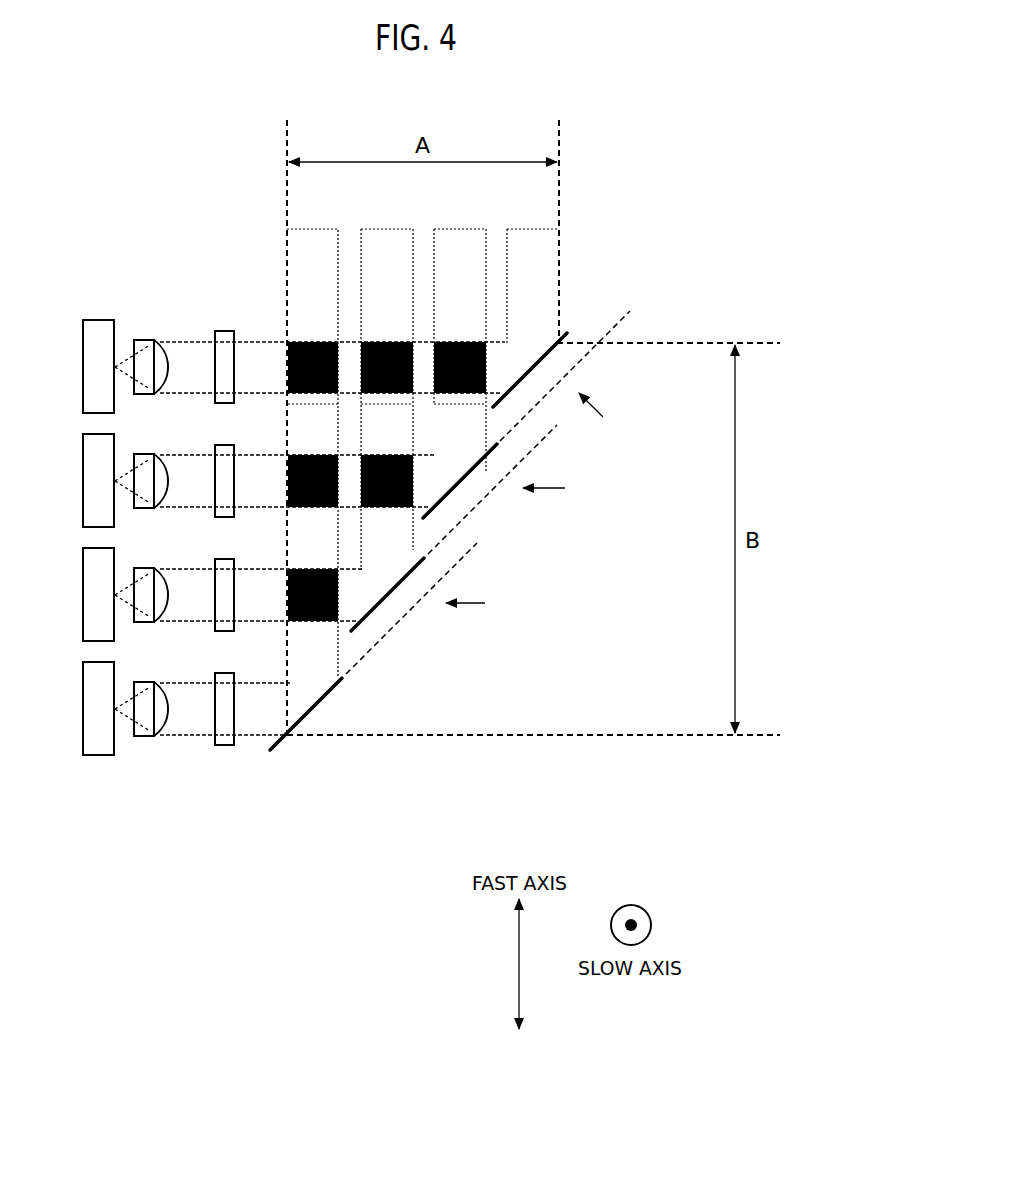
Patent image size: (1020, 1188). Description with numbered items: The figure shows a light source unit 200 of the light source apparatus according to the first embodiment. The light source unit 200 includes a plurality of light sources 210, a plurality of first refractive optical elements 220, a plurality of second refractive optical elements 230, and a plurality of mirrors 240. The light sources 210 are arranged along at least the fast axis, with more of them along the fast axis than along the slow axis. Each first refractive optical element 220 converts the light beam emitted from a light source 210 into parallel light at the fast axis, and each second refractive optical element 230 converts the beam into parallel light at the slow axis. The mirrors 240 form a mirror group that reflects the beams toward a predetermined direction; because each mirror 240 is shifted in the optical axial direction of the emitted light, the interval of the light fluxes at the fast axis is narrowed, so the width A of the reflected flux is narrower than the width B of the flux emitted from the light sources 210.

The light source unit 200 is at (609, 182).
The light source 210 is at (97, 318).
The first refractive optical element 220 is at (148, 338).
The second refractive optical element 230 is at (230, 330).
The mirror 240 is at (553, 352).